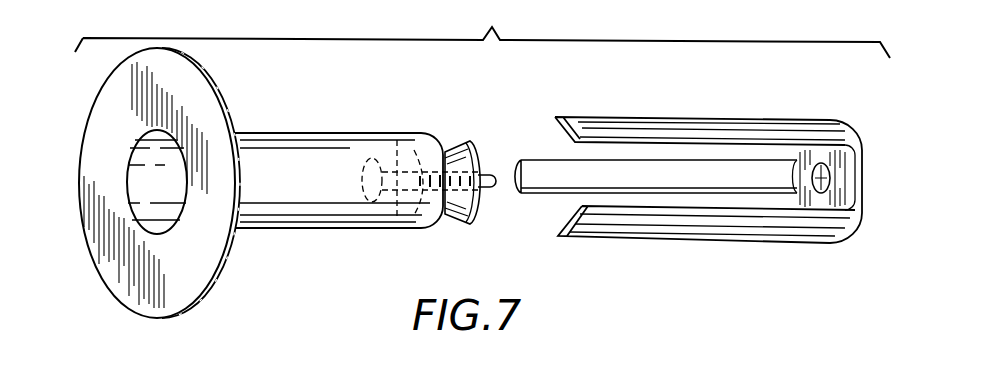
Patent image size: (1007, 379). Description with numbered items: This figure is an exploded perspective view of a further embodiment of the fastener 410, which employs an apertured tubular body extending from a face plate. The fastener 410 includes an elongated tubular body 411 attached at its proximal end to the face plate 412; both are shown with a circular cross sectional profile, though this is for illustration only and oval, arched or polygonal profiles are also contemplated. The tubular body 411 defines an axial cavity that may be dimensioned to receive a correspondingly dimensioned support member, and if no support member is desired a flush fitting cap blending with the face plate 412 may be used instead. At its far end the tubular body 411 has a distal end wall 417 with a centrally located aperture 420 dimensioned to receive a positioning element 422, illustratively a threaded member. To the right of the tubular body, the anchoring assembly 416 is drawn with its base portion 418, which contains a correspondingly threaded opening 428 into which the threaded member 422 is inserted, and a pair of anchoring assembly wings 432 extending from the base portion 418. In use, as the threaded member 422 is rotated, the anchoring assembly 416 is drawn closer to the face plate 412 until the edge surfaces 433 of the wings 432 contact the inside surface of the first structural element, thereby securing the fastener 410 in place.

The fastener 410 is at (608, 95).
The tubular body 411 is at (379, 122).
The face plate 412 is at (197, 273).
The anchoring assembly 416 is at (742, 113).
The distal end wall 417 is at (440, 145).
The base portion 418 is at (843, 158).
The aperture 420 is at (420, 240).
The positioning element 422 is at (479, 163).
The threaded opening 428 is at (823, 183).
The anchoring assembly wings 432 is at (693, 230).
The edge surfaces 433 is at (517, 196).